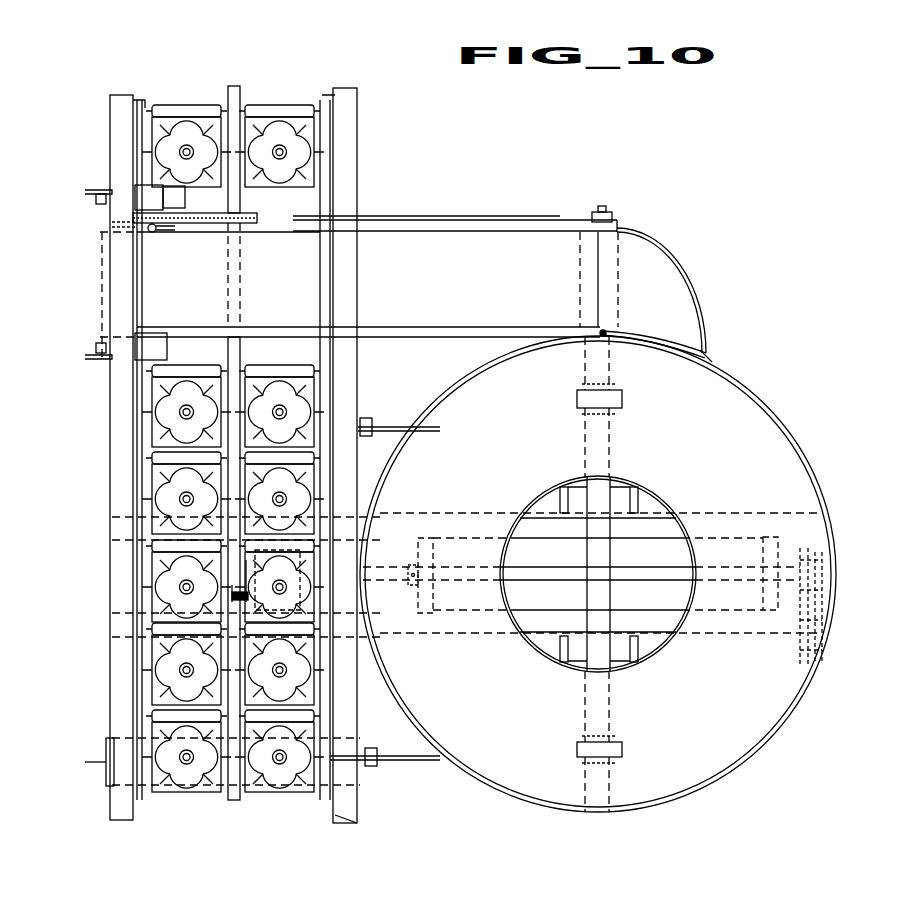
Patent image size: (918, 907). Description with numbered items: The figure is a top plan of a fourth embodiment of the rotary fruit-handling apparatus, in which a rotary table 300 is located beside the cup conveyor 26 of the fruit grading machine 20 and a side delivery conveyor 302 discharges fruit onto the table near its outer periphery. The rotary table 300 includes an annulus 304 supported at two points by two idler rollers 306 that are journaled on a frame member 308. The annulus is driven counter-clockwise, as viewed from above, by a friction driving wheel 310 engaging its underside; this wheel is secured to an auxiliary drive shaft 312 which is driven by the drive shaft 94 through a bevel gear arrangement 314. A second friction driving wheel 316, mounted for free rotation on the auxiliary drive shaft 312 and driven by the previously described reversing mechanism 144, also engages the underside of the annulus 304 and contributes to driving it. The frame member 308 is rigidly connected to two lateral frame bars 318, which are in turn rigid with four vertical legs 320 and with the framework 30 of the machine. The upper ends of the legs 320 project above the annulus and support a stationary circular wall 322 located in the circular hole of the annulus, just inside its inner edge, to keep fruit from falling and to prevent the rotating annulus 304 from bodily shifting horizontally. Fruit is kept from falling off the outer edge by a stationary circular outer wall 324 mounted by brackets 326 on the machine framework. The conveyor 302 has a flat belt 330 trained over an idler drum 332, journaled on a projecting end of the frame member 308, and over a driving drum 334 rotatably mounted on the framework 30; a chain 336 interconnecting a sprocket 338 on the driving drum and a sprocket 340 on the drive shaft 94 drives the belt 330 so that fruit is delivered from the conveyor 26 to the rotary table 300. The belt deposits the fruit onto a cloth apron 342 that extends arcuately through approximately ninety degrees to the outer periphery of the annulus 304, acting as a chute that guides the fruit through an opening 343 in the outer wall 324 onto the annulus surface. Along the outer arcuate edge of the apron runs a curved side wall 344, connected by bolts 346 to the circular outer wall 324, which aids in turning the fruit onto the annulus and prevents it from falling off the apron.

The grading machine 20 is at (402, 196).
The cup conveyor 26 is at (272, 92).
The framework 30 is at (372, 418).
The drive shaft 94 is at (227, 98).
The reversing mechanism 144 is at (795, 645).
The rotary table 300 is at (598, 609).
The side delivery conveyor 302 is at (490, 216).
The annulus 304 is at (507, 449).
The idler rollers 306 is at (577, 399).
The frame member 308 is at (612, 463).
The friction driving wheel 310 is at (442, 536).
The auxiliary drive shaft 312 is at (458, 565).
The bevel gear arrangement 314 is at (238, 592).
The friction driving wheel 316 is at (770, 604).
The lateral frame bars 318 is at (440, 500).
The vertical legs 320 is at (600, 500).
The circular wall 322 is at (508, 595).
The circular outer wall 324 is at (785, 420).
The brackets 326 is at (395, 425).
The flat belt 330 is at (300, 310).
The idler drum 332 is at (580, 297).
The driving drum 334 is at (170, 232).
The chain 336 is at (196, 208).
The sprocket 338 is at (133, 223).
The sprocket 340 is at (236, 216).
The apron 342 is at (677, 313).
The opening 343 is at (625, 346).
The curved side wall 344 is at (688, 266).
The bolts 346 is at (710, 356).